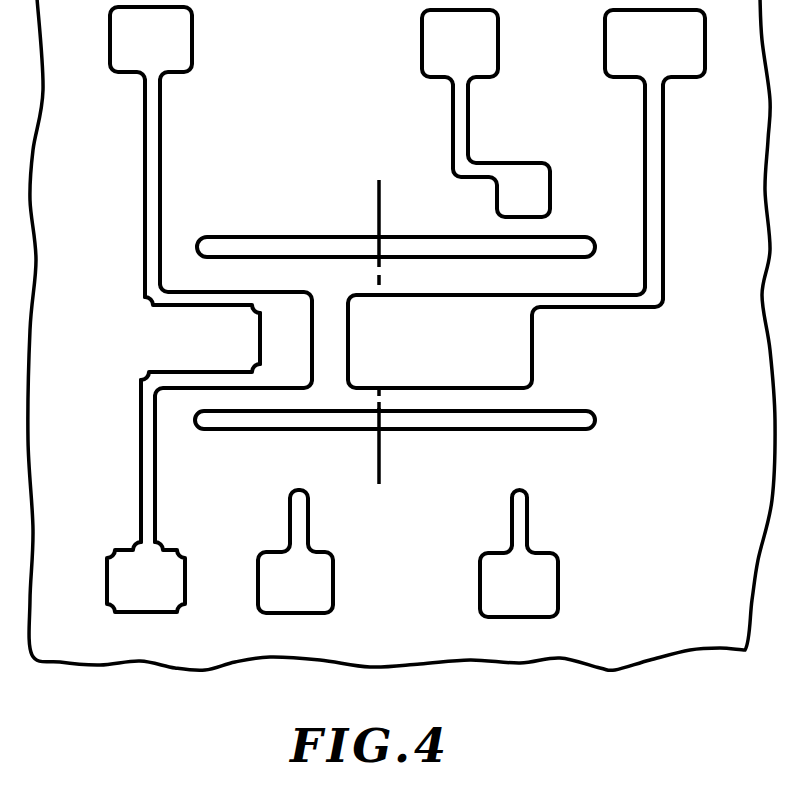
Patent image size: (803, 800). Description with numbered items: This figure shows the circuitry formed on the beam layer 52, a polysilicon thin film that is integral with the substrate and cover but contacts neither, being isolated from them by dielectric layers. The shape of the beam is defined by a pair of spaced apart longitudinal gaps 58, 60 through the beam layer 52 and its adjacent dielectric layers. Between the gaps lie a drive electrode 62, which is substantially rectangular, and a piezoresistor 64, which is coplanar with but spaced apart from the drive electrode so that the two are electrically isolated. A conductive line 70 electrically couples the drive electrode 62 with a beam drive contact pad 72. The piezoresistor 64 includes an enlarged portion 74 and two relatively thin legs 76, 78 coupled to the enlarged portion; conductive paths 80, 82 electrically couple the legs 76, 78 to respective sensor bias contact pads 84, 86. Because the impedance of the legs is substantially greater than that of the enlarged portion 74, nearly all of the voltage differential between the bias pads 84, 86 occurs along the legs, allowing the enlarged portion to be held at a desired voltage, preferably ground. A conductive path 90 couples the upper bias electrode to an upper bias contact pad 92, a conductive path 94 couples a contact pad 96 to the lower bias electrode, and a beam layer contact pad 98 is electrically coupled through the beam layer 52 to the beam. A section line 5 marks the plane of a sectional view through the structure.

The section line 5- 5 is at (335, 470).
The beam layer 52 is at (311, 56).
The longitudinal gap 58 is at (242, 238).
The longitudinal gap 60 is at (584, 432).
The drive electrode 62 is at (518, 351).
The piezoresistor 64 is at (262, 313).
The conductive line 70 is at (655, 183).
The beam drive contact pad 72 is at (622, 38).
The enlarged portion 74 is at (302, 311).
The leg 76 is at (223, 291).
The leg 78 is at (183, 393).
The conductive path 80 is at (152, 180).
The conductive path 82 is at (148, 500).
The sensor bias contact pad 84 is at (118, 40).
The sensor bias contact pad 86 is at (122, 583).
The conductive path 90 is at (460, 122).
The upper bias contact pad 92 is at (428, 38).
The conductive path 94 is at (522, 521).
The contact pad 96 is at (548, 585).
The beam layer contact pad 98 is at (318, 583).